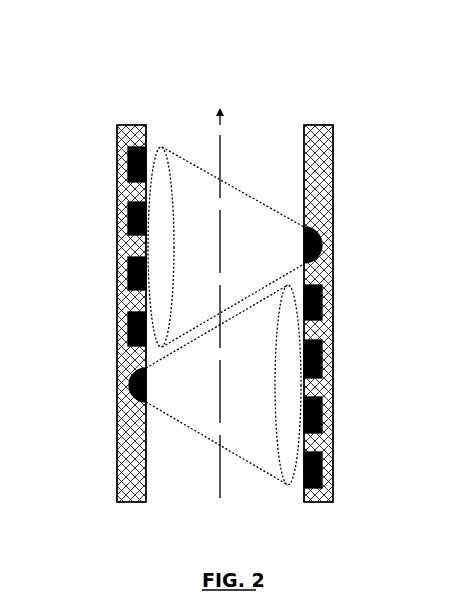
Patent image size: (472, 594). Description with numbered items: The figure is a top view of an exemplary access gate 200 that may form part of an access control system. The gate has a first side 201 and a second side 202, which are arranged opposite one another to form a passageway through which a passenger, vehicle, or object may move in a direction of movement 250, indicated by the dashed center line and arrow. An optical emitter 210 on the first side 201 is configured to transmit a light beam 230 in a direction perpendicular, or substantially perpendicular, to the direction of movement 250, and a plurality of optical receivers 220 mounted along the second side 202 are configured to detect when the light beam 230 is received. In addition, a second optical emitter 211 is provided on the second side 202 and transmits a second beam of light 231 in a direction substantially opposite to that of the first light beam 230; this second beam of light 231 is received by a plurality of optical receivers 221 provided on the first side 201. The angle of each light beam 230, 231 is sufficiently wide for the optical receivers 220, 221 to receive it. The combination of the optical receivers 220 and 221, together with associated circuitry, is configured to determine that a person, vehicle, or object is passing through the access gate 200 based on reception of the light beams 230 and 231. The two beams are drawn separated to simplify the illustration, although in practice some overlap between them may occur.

The access gate 200 is at (138, 66).
The first side 201 is at (122, 125).
The second side 202 is at (328, 125).
The optical emitter 210 is at (128, 375).
The second optical emitter 211 is at (322, 245).
The optical receivers 220 is at (322, 470).
The optical receivers 221 is at (130, 310).
The light beam 230 is at (277, 410).
The second beam of light 231 is at (173, 276).
The direction of movement 250 is at (215, 142).